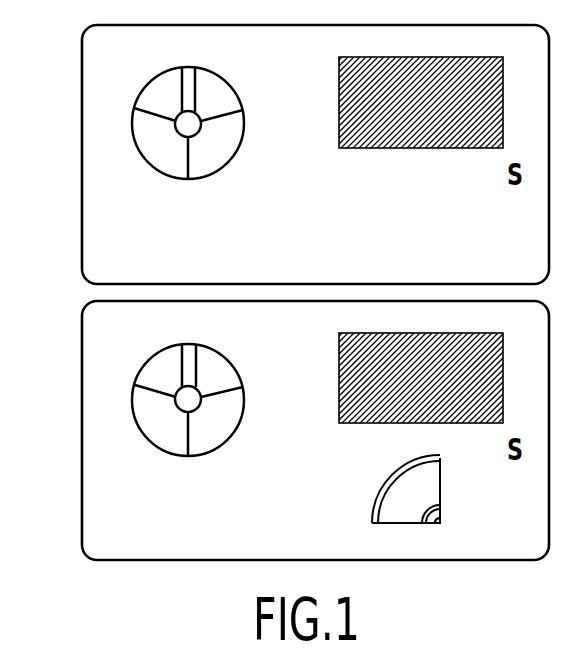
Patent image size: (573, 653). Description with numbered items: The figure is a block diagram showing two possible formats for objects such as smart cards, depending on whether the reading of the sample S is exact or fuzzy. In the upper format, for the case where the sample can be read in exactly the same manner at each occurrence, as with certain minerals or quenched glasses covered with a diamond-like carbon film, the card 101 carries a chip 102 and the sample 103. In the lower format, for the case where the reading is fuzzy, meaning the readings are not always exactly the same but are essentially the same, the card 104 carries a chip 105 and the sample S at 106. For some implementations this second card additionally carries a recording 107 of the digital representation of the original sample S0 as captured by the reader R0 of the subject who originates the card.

The card 101 is at (82, 171).
The chip 102 is at (212, 174).
The sample 103 is at (339, 101).
The card 104 is at (82, 446).
The chip 105 is at (212, 451).
The sample 106 is at (339, 376).
The recording 107 is at (378, 491).